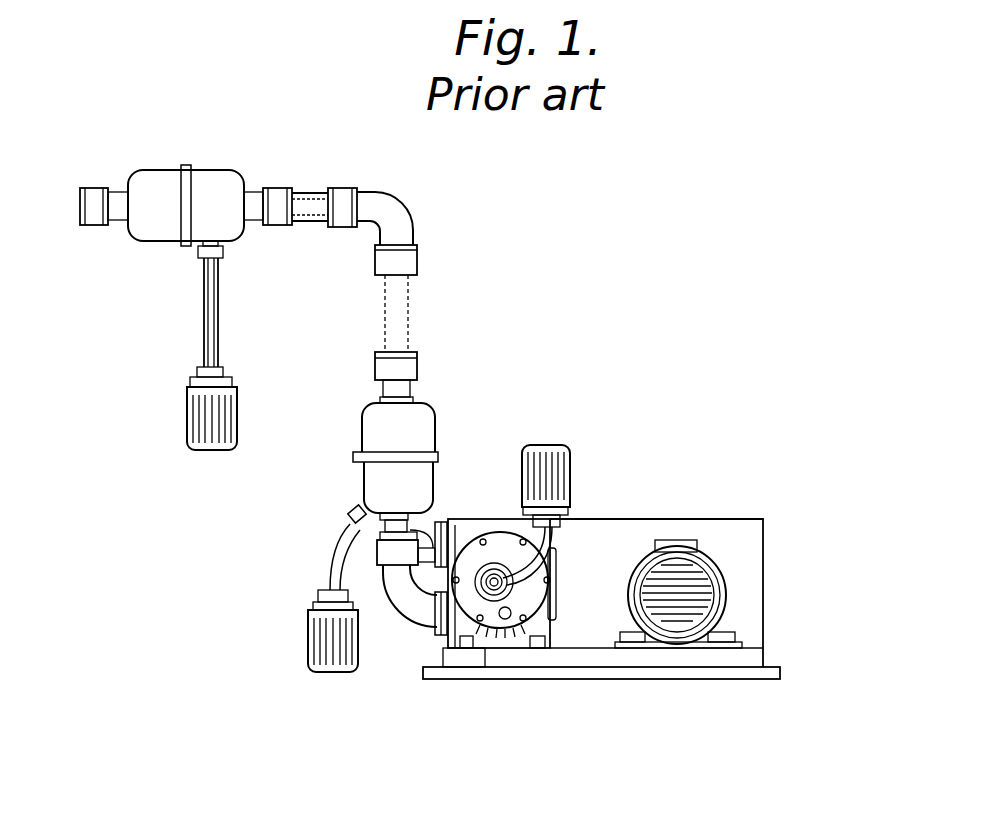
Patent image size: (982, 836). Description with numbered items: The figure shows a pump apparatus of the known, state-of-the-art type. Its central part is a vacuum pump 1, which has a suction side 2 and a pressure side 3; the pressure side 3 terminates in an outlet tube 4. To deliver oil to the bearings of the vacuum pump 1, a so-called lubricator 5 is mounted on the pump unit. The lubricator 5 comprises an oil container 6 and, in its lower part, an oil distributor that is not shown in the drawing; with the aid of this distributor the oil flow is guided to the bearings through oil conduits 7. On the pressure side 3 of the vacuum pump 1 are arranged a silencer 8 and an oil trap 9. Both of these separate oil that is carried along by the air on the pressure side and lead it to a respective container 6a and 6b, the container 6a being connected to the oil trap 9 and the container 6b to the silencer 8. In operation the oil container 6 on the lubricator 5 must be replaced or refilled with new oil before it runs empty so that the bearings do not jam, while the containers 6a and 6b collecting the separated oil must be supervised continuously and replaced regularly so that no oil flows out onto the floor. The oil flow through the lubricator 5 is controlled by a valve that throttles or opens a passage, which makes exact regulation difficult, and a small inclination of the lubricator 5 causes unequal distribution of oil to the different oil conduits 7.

The vacuum pump 1 is at (488, 612).
The suction side 2 is at (423, 537).
The pressure side 3 is at (405, 605).
The outlet tube 4 is at (80, 207).
The lubricator 5 is at (590, 500).
The oil container 6 is at (548, 462).
The container 6a is at (195, 415).
The container 6b is at (325, 645).
The oil conduits 7 is at (548, 543).
The silencer 8 is at (410, 425).
The oil trap 9 is at (160, 188).